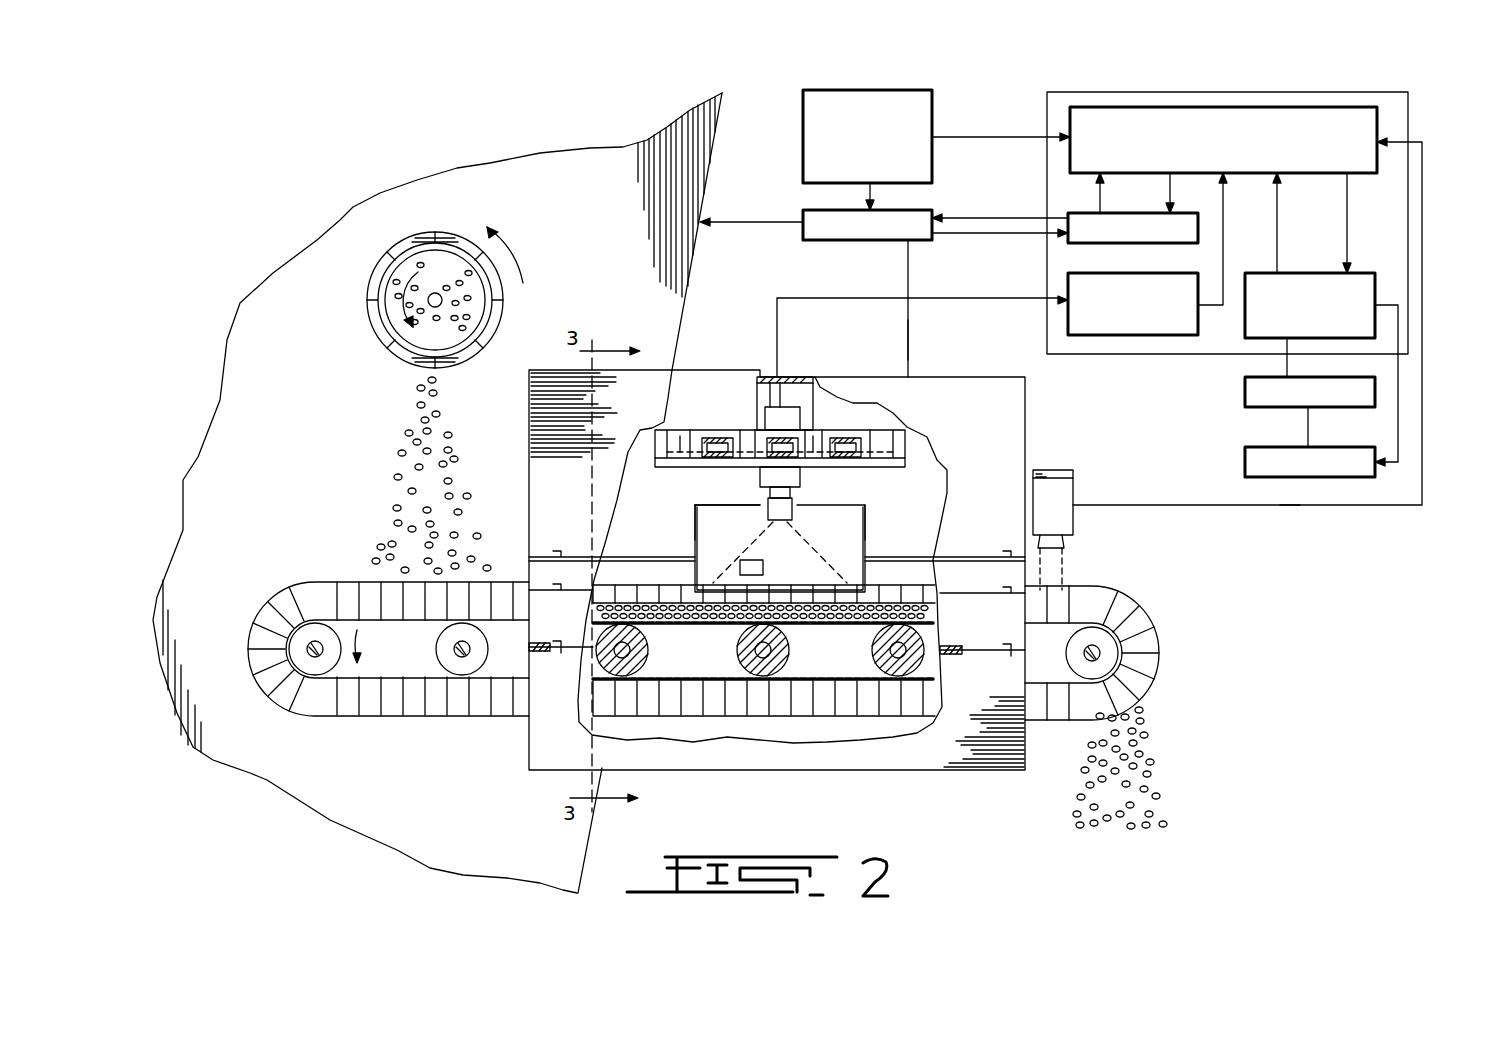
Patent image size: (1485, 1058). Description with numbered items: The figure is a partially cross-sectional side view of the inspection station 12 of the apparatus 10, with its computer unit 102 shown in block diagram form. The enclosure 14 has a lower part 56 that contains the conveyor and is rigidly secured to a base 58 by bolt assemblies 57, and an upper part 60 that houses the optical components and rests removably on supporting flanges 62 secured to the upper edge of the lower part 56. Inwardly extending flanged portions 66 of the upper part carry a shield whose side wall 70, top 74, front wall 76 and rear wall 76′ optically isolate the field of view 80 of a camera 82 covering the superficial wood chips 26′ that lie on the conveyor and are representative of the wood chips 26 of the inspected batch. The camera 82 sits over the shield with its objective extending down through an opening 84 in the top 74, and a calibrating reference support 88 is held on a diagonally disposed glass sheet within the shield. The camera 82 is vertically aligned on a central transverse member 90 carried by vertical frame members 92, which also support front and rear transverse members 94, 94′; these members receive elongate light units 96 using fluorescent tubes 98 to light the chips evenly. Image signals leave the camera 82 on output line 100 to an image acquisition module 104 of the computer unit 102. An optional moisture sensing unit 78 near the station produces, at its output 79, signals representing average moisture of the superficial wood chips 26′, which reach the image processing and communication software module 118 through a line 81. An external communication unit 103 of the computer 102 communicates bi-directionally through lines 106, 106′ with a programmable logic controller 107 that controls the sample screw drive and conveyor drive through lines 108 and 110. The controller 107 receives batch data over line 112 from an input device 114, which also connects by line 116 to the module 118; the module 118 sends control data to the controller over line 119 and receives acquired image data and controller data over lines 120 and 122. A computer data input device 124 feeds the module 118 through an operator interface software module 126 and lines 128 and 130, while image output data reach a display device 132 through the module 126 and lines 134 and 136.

The apparatus 10 is at (1090, 80).
The inspection station 12 is at (605, 330).
The enclosure 14 is at (947, 496).
The wood chips 26 is at (1162, 743).
The superficial wood chips 26′ is at (912, 605).
The lower part 56 is at (781, 397).
The bolt assemblies 57 is at (557, 673).
The base 58 is at (957, 750).
The upper part 60 is at (1015, 398).
The supporting flanges 62 is at (540, 543).
The flanged portion 66 is at (675, 555).
The side wall 70 is at (736, 550).
The top 74 is at (727, 505).
The front wall 76 is at (697, 520).
The rear wall 76′ is at (865, 510).
The moisture sensing unit 78 is at (1075, 473).
The output 79 is at (1073, 505).
The field of view 80 is at (835, 565).
The line 81 is at (1280, 507).
The camera 82 is at (905, 462).
The opening 84 is at (803, 483).
The calibrating reference support 88 is at (752, 560).
The central transverse member 90 is at (812, 403).
The vertical frame member 92 is at (772, 395).
The front transverse member 94 is at (720, 437).
The rear transverse member 94′ is at (865, 432).
The elongate electrical light units 96 is at (673, 433).
The fluorescent tubes 98 is at (690, 430).
The output line 100 is at (882, 298).
The computer unit 102 is at (1327, 100).
The external communication unit 103 is at (1082, 246).
The image acquisition module 104 is at (1068, 316).
The line 106 is at (972, 234).
The line 106′ is at (970, 217).
The programmable logic controller 107 is at (812, 236).
The line 108 is at (733, 222).
The line 110 is at (912, 337).
The line 112 is at (866, 192).
The input device 114 is at (822, 96).
The line 116 is at (968, 137).
The image processing and communication software module 118 is at (1370, 140).
The line 119 is at (1170, 192).
The line 120 is at (1223, 233).
The line 122 is at (1100, 196).
The computer data input device 124 is at (1375, 388).
The operator interface software module 126 is at (1365, 290).
The line 128 is at (1287, 363).
The line 130 is at (1278, 233).
The display device 132 is at (1355, 470).
The line 134 is at (1347, 235).
The line 136 is at (1398, 430).